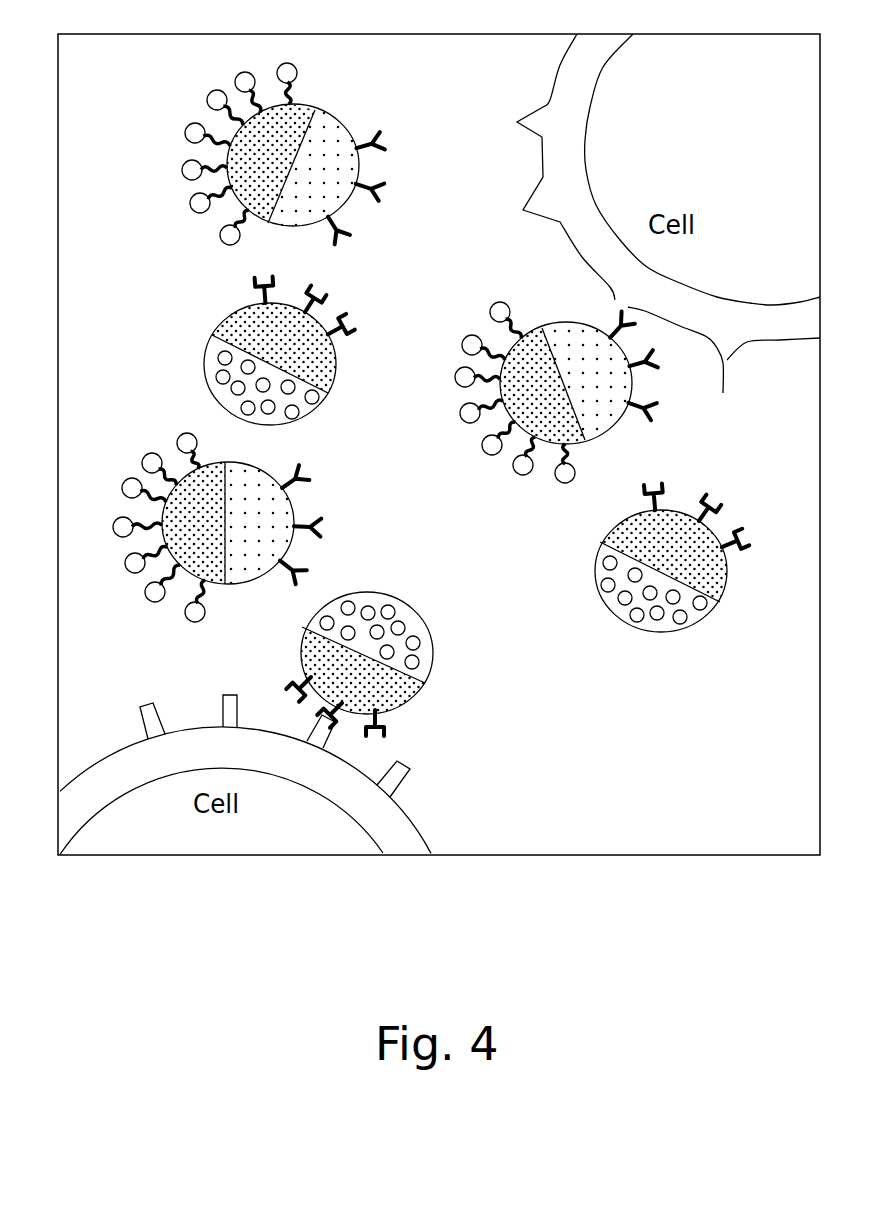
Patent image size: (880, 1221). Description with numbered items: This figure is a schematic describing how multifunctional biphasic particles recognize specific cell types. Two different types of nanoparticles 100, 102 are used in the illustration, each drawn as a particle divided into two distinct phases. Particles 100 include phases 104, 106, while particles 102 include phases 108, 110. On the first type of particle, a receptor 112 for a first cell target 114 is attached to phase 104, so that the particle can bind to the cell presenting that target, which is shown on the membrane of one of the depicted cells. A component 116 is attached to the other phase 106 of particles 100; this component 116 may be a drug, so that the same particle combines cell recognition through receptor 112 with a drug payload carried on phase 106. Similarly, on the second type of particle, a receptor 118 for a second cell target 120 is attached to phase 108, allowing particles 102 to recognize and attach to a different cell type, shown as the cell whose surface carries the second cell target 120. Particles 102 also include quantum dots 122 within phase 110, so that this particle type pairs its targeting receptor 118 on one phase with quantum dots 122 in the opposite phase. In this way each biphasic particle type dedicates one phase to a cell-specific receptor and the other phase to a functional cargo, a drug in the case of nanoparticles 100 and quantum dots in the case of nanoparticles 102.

The nanoparticle 100 is at (425, 340).
The nanoparticle 102 is at (339, 511).
The phase 104 is at (365, 163).
The phase 106 is at (296, 151).
The phase 108 is at (685, 567).
The phase 110 is at (663, 624).
The receptor 112 is at (390, 150).
The first cell target 114 is at (630, 308).
The component 116 is at (183, 173).
The receptor 118 is at (387, 731).
The second cell target 120 is at (410, 770).
The quantum dots 122 is at (370, 596).